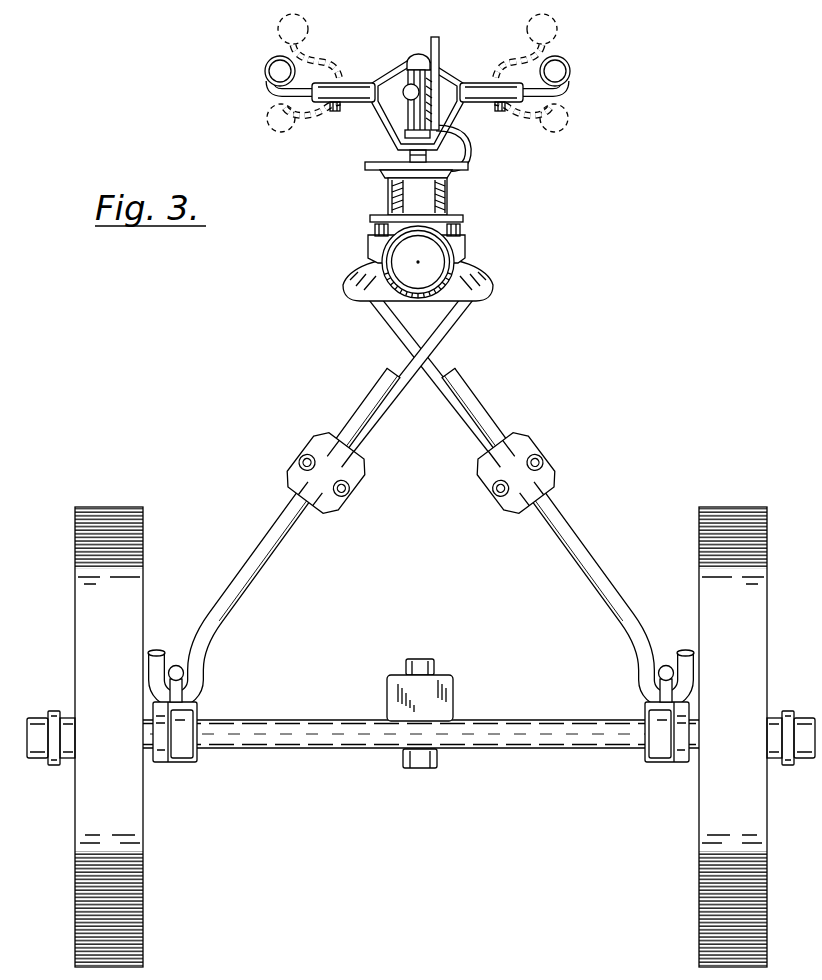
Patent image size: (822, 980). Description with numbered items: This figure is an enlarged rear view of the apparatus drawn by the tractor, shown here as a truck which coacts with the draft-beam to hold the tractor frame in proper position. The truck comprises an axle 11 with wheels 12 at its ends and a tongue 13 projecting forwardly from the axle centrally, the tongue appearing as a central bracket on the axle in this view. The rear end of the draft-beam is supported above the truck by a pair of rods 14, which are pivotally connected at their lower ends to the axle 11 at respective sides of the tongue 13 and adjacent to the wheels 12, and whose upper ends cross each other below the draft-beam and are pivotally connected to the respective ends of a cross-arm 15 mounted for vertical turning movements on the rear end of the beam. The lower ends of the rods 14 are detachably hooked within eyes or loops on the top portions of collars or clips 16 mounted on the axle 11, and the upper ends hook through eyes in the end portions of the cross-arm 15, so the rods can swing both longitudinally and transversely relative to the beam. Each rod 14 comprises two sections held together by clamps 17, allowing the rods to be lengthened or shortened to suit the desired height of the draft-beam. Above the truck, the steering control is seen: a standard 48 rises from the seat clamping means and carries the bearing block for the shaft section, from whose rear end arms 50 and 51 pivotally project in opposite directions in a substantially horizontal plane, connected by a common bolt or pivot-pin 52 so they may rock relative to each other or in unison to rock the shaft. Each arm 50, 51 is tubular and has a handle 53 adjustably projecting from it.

The axle 11 is at (527, 742).
The wheels 12 is at (421, 737).
The tongue 13 is at (438, 692).
The rods 14 is at (248, 585).
The cross-arm 15 is at (447, 273).
The collars or clips 16 is at (184, 712).
The clamps 17 is at (298, 484).
The standard 48 is at (441, 55).
The arm 50 is at (347, 90).
The arm 51 is at (486, 101).
The bolt or pivot-pin 52 is at (417, 112).
The handle 53 is at (289, 93).